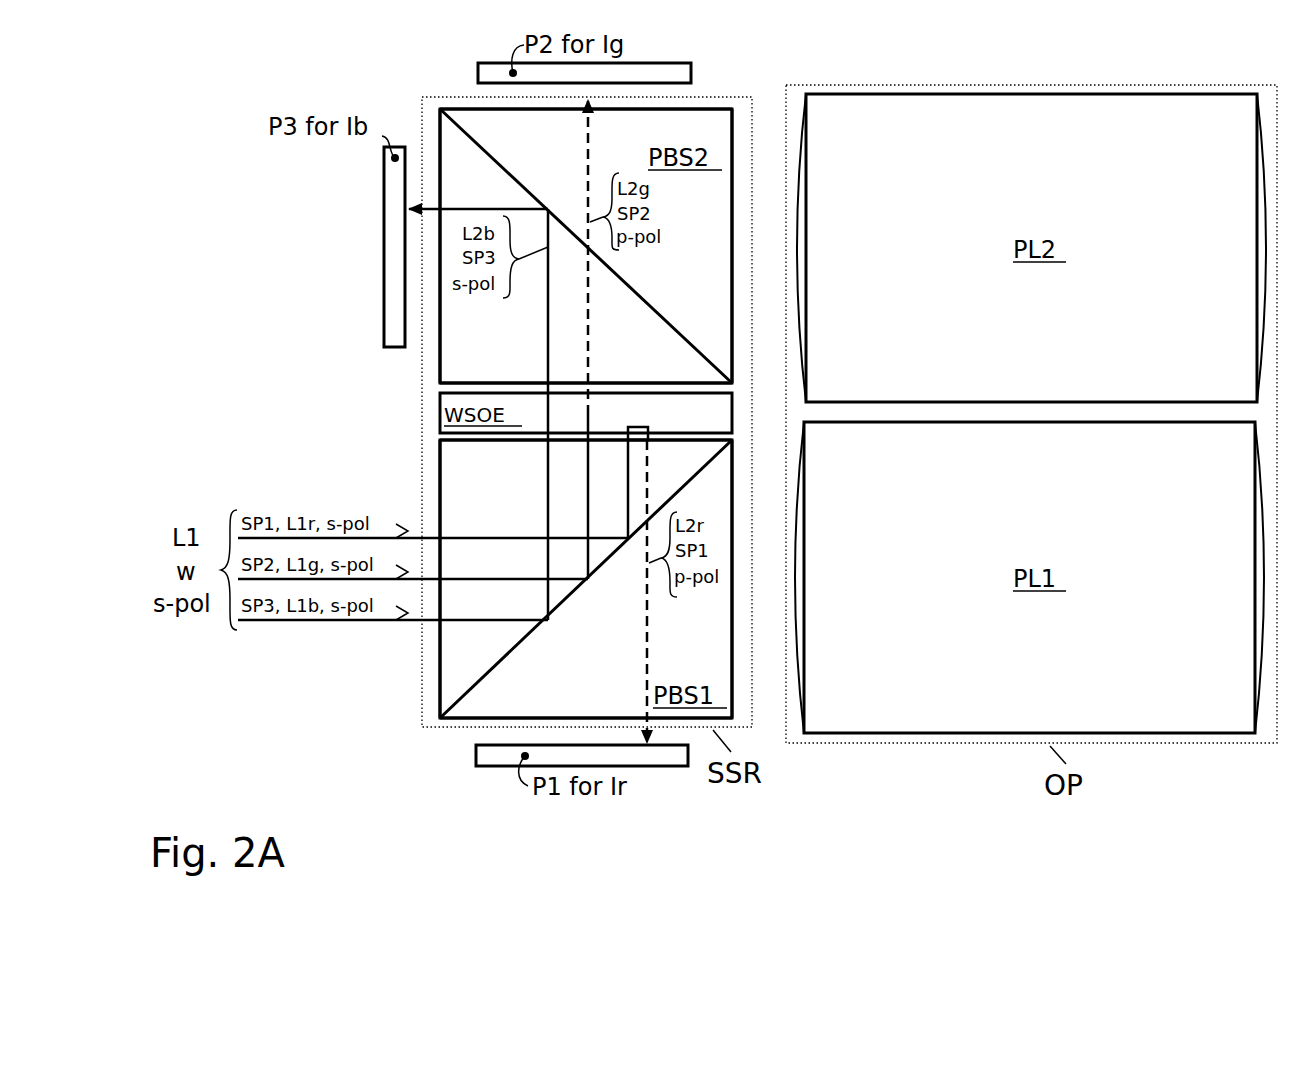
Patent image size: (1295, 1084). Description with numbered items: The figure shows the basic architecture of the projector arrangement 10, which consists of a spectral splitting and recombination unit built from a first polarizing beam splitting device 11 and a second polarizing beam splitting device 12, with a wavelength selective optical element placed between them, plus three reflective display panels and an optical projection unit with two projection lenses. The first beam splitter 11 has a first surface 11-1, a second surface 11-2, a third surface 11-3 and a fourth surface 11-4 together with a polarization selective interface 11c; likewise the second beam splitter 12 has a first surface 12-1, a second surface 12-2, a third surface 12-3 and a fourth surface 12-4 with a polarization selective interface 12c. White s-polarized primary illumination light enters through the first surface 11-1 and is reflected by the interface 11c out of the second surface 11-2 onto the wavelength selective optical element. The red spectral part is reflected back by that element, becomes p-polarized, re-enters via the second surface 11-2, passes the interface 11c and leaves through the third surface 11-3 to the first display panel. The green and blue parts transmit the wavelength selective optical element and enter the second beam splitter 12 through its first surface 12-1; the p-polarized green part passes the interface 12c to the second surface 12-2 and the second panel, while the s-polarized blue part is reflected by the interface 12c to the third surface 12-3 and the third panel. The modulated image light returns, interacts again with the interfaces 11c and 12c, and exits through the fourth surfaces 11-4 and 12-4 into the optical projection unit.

The projector arrangement 10 is at (257, 92).
The second polarization selective beam splitting device 12 is at (547, 232).
The first surface of second polarizing beam splitting device 12-1 is at (521, 380).
The second surface of second polarizing beam splitting device 12-2 is at (446, 106).
The third surface of second polarizing beam splitting device 12-3 is at (436, 357).
The fourth surface of second polarizing beam splitting device 12-4 is at (729, 263).
The polarization selective interface 12c is at (626, 294).
The first polarization selective beam splitting device 11 is at (547, 579).
The first surface of first polarizing beam splitting device 11-1 is at (436, 452).
The second surface of first polarizing beam splitting device 11-2 is at (521, 445).
The third surface of first polarizing beam splitting device 11-3 is at (595, 714).
The fourth surface of first polarizing beam splitting device 11-4 is at (729, 599).
The polarization selective interface 11c is at (590, 581).